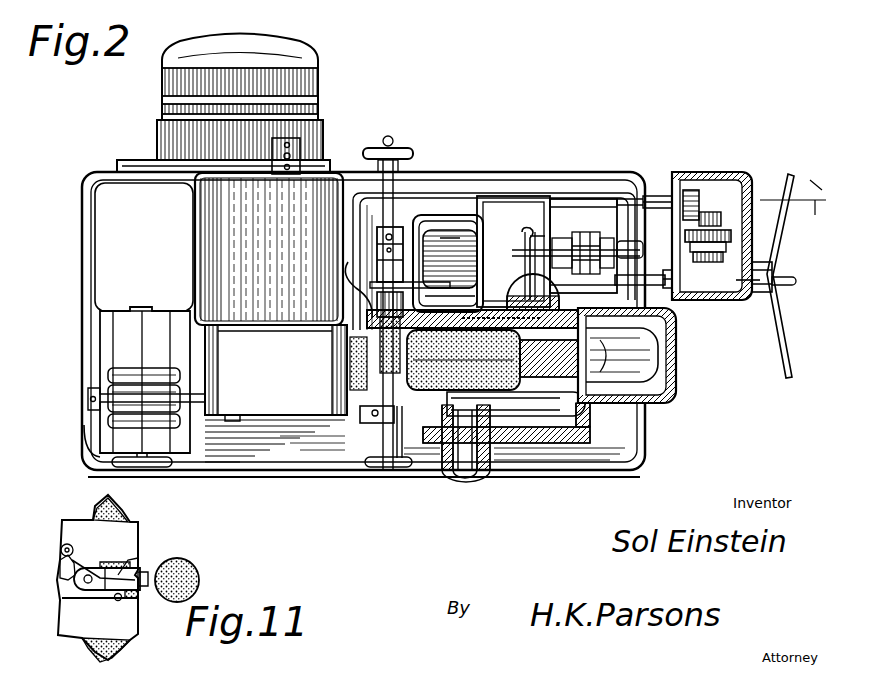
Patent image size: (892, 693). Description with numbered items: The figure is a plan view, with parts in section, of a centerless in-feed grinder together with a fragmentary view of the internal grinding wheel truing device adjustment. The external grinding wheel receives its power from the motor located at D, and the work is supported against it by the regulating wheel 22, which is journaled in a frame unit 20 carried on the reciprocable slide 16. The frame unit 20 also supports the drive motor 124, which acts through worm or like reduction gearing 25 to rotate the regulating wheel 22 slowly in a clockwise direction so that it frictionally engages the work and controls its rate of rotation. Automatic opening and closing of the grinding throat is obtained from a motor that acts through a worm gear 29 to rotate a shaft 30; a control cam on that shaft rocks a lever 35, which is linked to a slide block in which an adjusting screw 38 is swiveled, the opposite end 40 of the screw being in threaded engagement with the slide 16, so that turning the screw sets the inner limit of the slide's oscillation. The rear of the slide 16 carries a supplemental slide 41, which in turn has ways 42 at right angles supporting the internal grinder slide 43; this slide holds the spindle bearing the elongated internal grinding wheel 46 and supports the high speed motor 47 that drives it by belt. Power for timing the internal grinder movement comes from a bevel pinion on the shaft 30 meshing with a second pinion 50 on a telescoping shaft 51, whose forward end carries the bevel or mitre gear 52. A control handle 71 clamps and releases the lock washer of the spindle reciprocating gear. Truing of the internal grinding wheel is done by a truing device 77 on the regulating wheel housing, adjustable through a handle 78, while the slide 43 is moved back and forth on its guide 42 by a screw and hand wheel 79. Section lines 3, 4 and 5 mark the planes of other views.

In FIG. 2, the motor location D is at (160, 122).
In FIG. 2, the section line 3- 3 is at (415, 97).
In FIG. 2, the section line 4- 4 is at (298, 252).
In FIG. 2, the section line 5- 5 is at (373, 208).
In FIG. 2, the reciprocable slide 16 is at (625, 197).
In FIG. 11, the frame unit 20 is at (88, 515).
In FIG. 2, the regulating wheel 22 is at (418, 447).
In FIG. 11, the regulating wheel 22 is at (107, 581).
In FIG. 2, the reduction gearing 25 is at (628, 372).
In FIG. 2, the worm gear 29 is at (735, 236).
In FIG. 2, the shaft 30 is at (720, 214).
In FIG. 2, the lever 35 is at (765, 290).
In FIG. 2, the adjusting screw 38 is at (645, 290).
In FIG. 2, the threaded end of adjusting screw 40 is at (583, 198).
In FIG. 2, the supplemental slide 41 is at (560, 232).
In FIG. 2, the ways 42 is at (470, 230).
In FIG. 2, the internal grinder slide 43 is at (455, 232).
In FIG. 11, the internal grinding wheel 46 is at (195, 574).
In FIG. 2, the high speed motor 47 is at (438, 220).
In FIG. 2, the second pinion 50 is at (700, 174).
In FIG. 2, the telescoping shaft 51 is at (630, 150).
In FIG. 2, the bevel or mitre gear 52 is at (745, 190).
In FIG. 2, the control handle 71 is at (272, 150).
In FIG. 2, the truing device 77 is at (480, 292).
In FIG. 11, the truing device 77 is at (150, 576).
In FIG. 2, the handle 78 is at (510, 200).
In FIG. 2, the hand wheel 79 is at (380, 148).
In FIG. 2, the drive motor 124 is at (640, 348).